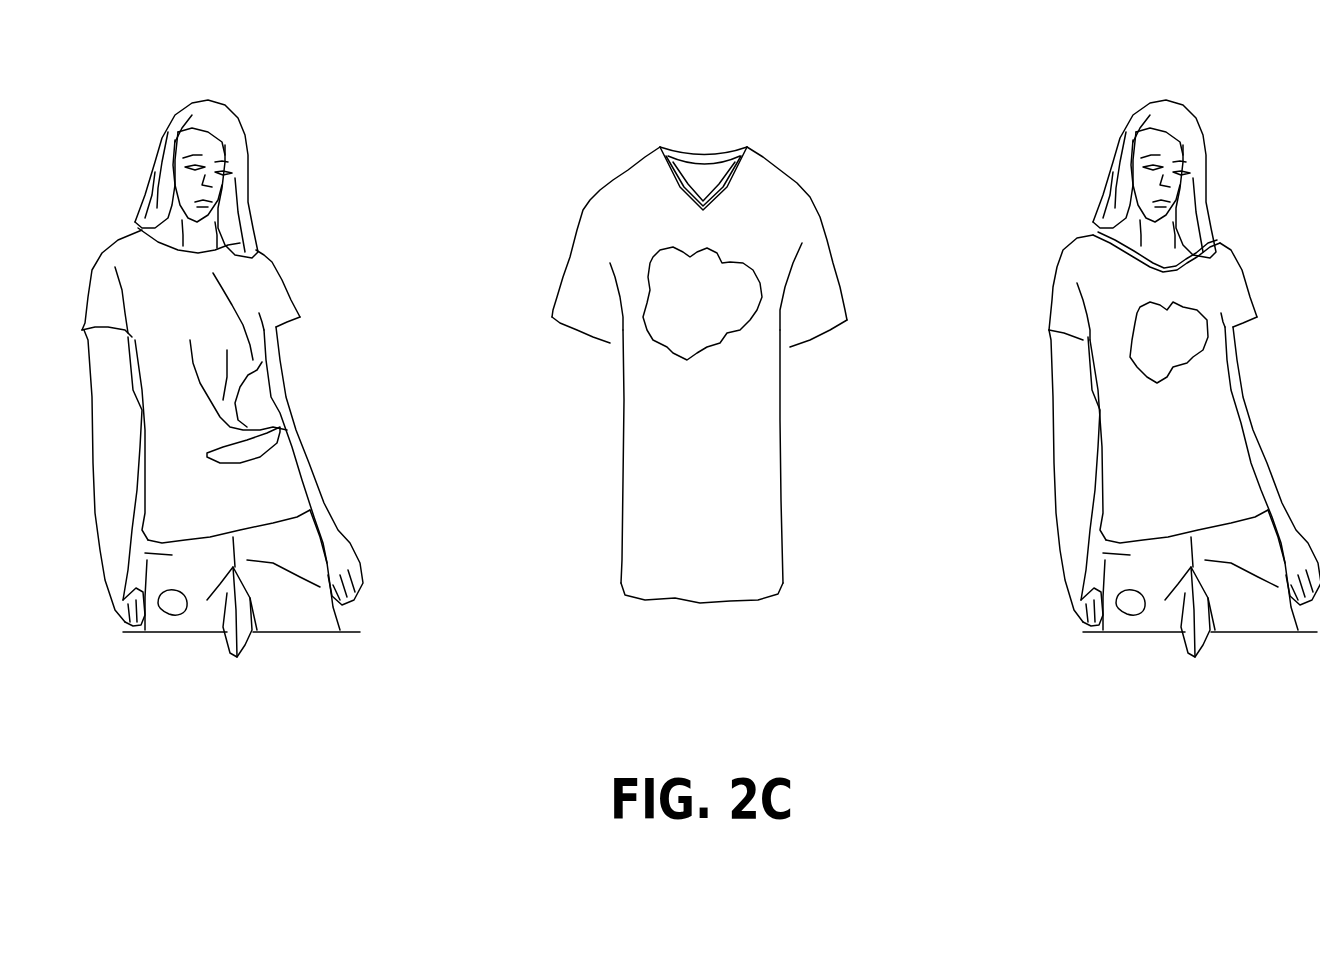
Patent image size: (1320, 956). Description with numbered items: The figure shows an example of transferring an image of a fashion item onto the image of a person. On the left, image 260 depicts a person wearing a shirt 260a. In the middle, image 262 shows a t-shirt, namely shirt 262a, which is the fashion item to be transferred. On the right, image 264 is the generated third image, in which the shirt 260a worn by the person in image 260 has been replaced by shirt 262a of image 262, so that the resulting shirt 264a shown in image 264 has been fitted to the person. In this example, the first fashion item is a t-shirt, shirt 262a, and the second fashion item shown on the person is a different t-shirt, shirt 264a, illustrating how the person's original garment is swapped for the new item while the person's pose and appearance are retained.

The image 260 is at (233, 80).
The shirt 260a is at (270, 257).
The image 262 is at (733, 80).
The shirt 262a is at (785, 193).
The image 264 is at (1197, 80).
The shirt 264a is at (1167, 362).